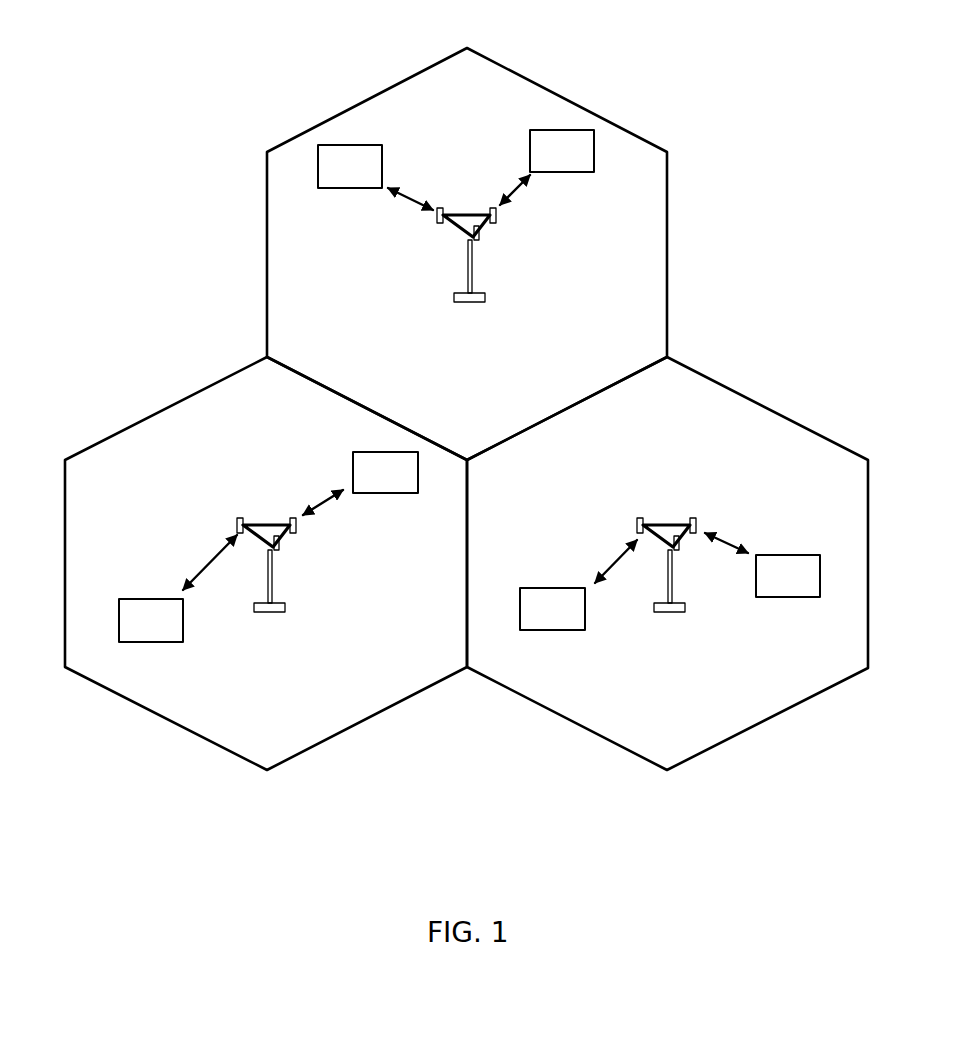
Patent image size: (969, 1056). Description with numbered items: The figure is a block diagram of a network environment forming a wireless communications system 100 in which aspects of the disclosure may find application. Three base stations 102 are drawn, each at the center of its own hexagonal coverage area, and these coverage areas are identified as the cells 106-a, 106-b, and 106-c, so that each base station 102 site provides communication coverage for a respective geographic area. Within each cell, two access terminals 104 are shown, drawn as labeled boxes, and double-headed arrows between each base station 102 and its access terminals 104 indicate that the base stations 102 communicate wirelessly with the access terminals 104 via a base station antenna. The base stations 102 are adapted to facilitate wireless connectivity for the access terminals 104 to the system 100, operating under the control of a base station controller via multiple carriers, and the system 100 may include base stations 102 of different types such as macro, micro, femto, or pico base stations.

The wireless communications system 100 is at (781, 75).
The base station 102 is at (470, 213).
The access terminal 104 is at (340, 189).
The cell 106-a is at (145, 419).
The cell 106-b is at (552, 91).
The cell 106-c is at (768, 410).